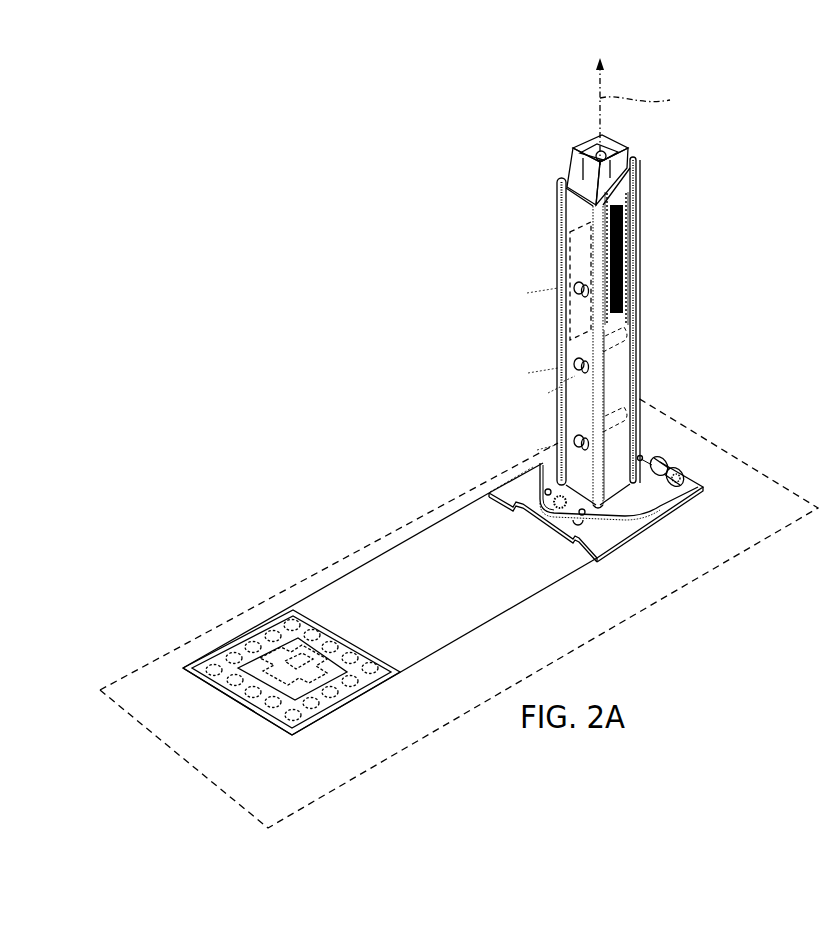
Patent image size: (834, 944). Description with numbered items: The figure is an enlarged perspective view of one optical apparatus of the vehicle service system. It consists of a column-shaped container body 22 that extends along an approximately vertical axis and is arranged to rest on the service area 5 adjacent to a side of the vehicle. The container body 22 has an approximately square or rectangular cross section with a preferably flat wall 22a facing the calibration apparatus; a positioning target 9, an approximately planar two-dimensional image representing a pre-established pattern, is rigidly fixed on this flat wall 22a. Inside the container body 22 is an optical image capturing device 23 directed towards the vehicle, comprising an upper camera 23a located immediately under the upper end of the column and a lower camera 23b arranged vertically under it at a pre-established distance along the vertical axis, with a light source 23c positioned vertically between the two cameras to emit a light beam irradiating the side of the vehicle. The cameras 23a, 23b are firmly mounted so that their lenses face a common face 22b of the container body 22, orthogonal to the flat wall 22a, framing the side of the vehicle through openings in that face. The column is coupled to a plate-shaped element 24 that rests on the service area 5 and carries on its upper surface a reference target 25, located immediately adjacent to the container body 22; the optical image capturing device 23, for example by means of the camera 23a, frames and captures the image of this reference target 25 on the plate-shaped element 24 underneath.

The service area 5 is at (160, 690).
The positioning target 9 is at (622, 244).
The container body 22 is at (592, 310).
The flat wall 22a is at (624, 328).
The common face 22b is at (573, 213).
The optical image capturing device 23 is at (566, 243).
The camera 23a is at (568, 287).
The camera 23b is at (568, 440).
The light source 23c is at (568, 363).
The plate-shaped element 24 is at (443, 568).
The reference target 25 is at (270, 654).